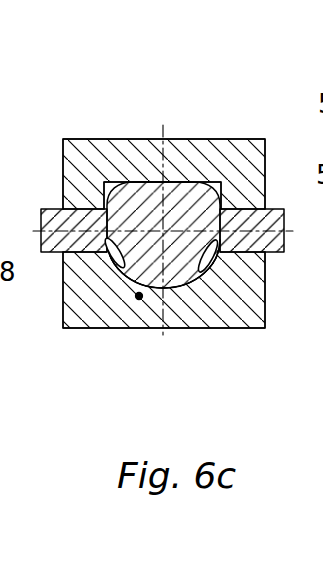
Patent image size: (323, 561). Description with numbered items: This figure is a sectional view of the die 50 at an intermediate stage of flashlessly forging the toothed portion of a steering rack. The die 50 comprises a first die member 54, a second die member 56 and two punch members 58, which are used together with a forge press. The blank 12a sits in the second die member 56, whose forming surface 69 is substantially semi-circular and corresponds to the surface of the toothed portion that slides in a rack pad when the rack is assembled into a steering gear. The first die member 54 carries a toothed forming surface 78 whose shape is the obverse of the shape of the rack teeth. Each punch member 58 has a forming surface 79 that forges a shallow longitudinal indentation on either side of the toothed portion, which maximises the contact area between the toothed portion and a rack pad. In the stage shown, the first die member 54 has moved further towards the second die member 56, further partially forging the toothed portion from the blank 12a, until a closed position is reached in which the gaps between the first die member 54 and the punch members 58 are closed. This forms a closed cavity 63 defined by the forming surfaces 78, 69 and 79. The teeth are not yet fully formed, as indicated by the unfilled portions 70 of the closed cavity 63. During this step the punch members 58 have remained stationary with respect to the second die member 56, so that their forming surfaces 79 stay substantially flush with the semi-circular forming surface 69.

The die 50 is at (141, 107).
The first die member 54 is at (108, 150).
The second die member 56 is at (100, 318).
The punch members 58 is at (55, 212).
The closed cavity 63 is at (148, 287).
The forming surface 69 is at (188, 290).
The unfilled portions 70 is at (208, 185).
The toothed forming surface 78 is at (180, 181).
The forming surface 79 is at (118, 272).
The blank 12a is at (195, 213).